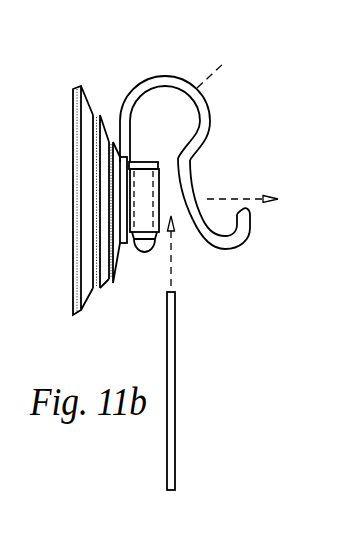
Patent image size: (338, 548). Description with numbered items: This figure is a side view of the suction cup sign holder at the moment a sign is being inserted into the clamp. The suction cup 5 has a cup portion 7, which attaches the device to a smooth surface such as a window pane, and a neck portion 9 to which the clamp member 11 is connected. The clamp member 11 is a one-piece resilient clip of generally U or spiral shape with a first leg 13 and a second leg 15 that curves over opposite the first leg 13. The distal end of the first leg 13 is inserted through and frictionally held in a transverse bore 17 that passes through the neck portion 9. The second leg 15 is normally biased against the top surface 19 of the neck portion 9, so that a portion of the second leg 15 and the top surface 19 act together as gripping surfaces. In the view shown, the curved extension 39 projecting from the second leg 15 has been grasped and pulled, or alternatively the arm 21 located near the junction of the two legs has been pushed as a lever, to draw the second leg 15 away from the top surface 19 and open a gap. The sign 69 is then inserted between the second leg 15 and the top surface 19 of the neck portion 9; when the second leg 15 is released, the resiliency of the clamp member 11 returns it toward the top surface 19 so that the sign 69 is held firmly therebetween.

The suction cup 5 is at (85, 210).
The cup portion 7 is at (72, 128).
The neck portion 9 is at (129, 158).
The clamp member 11 is at (204, 93).
The first leg 13 is at (141, 90).
The second leg 15 is at (195, 172).
The transverse bore 17 is at (143, 250).
The top surface 19 is at (155, 248).
The arm 21 is at (225, 64).
The curved extension 39 is at (256, 233).
The sign 69 is at (177, 392).